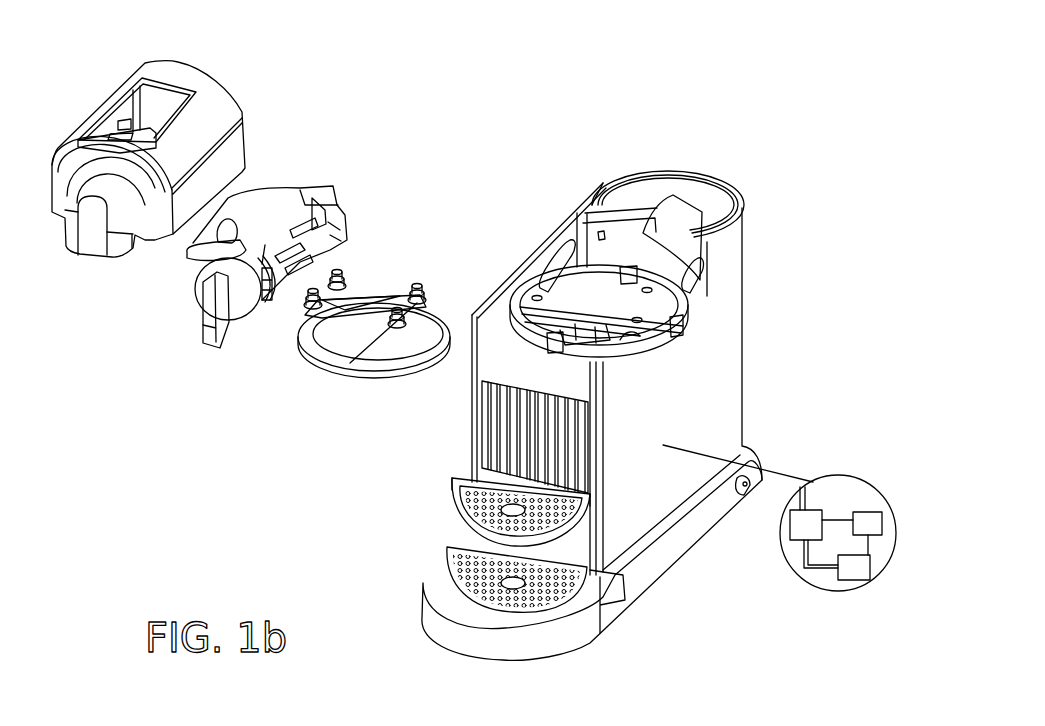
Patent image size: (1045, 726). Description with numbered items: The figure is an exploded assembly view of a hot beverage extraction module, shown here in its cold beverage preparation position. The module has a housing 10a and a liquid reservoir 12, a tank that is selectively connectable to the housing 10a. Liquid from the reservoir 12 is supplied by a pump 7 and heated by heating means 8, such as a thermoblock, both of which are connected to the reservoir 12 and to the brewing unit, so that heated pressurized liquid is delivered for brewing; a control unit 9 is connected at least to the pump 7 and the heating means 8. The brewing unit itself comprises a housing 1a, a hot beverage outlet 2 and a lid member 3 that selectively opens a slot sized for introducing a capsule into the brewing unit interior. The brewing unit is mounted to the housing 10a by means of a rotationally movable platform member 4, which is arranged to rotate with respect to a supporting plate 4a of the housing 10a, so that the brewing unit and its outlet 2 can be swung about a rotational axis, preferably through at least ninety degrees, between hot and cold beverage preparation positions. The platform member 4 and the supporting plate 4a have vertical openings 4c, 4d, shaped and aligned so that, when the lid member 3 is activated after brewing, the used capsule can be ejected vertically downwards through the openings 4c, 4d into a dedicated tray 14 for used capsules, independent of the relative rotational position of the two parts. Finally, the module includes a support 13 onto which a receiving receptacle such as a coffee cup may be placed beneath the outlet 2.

The housing 1a is at (212, 93).
The lid member 3 is at (251, 212).
The hot beverage outlet 2 is at (207, 347).
The platform member 4 is at (355, 328).
The vertical opening 4c is at (343, 343).
The supporting plate 4a is at (687, 307).
The vertical opening 4d is at (557, 323).
The liquid reservoir 12 is at (733, 275).
The housing 10a is at (586, 415).
The tray 14 is at (500, 423).
The support 13 is at (453, 508).
The control unit 9 is at (868, 522).
The heating means 8 is at (803, 527).
The pump 7 is at (860, 568).